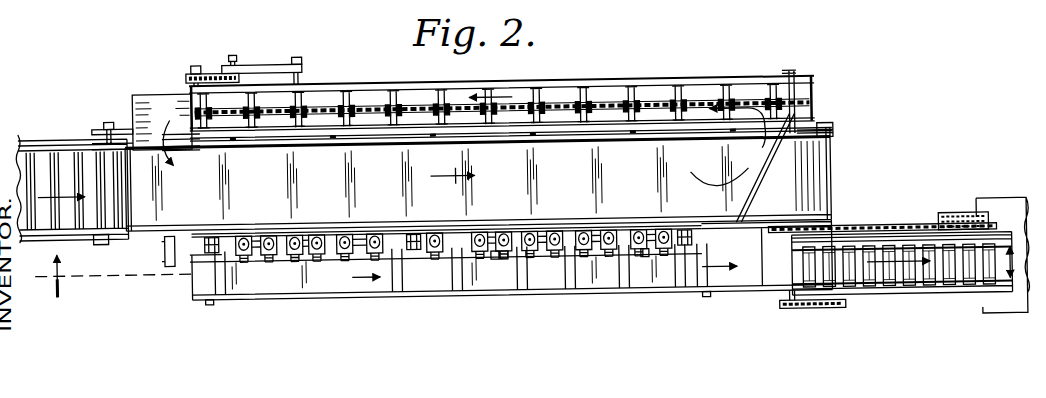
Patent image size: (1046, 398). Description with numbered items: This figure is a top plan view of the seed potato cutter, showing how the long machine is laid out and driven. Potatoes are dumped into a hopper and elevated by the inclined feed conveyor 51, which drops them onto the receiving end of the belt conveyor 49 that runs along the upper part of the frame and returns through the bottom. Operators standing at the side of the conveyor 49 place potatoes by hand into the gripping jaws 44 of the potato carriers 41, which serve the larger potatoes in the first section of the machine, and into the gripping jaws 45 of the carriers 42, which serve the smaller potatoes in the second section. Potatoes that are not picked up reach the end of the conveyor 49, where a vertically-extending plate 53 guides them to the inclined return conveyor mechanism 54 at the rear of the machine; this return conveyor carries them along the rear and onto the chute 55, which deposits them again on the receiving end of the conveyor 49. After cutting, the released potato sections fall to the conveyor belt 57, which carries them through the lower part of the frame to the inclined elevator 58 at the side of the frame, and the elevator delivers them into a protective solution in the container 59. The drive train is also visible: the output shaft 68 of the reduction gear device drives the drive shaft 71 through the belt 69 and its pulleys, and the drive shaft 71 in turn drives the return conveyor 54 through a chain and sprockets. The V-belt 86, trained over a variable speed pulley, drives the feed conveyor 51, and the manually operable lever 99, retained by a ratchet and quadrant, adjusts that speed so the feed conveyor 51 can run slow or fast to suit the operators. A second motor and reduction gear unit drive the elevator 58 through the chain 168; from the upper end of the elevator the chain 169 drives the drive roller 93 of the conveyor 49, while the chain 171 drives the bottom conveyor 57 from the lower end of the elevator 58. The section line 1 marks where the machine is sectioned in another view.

The section line 1- 1 is at (530, 268).
The potato carriers 41 is at (267, 233).
The carriers 42 is at (502, 251).
The gripping jaws 44 is at (315, 234).
The gripping jaws 45 is at (502, 235).
The conveyor 49 is at (353, 188).
The inclined conveyor 51 is at (62, 163).
The vertically-extending plate 53 is at (760, 161).
The inclined return conveyor mechanism 54 is at (590, 102).
The chute 55 is at (145, 112).
The conveyor belt 57 is at (543, 274).
The inclined elevator 58 is at (882, 276).
The container 59 is at (1002, 206).
The output shaft 68 is at (302, 76).
The belt 69 is at (277, 61).
The drive shaft 71 is at (235, 57).
The V-belt 86 is at (127, 116).
The drive roller 93 is at (833, 138).
The manually operable lever 99 is at (163, 262).
The chain 168 is at (963, 215).
The chain 169 is at (863, 233).
The chain 171 is at (777, 237).